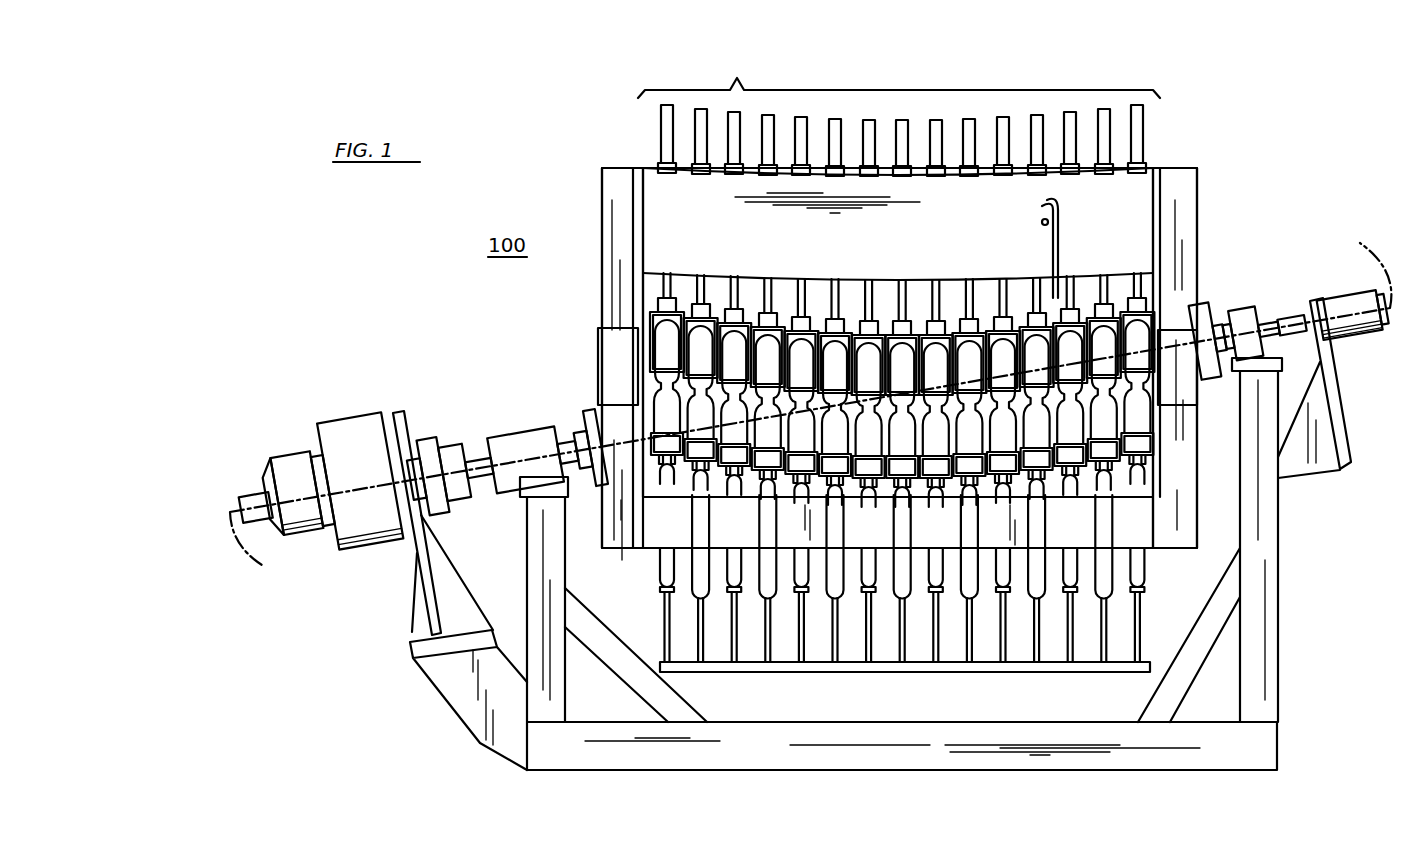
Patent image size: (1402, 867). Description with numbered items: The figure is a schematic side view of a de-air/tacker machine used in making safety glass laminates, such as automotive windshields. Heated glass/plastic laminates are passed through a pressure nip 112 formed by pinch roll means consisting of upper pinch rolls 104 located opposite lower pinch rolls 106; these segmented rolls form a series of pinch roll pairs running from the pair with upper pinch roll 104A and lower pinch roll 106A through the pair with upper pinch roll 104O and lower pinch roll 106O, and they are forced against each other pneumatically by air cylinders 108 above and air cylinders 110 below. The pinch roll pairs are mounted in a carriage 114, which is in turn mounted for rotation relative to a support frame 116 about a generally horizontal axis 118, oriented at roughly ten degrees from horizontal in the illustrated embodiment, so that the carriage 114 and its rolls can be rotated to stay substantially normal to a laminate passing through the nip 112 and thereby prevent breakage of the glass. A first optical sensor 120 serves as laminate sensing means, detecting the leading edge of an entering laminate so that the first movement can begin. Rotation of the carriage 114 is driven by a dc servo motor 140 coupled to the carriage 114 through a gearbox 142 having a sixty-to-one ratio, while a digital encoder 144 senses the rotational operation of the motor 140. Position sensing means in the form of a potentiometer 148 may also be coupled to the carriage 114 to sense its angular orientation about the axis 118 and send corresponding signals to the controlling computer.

The upper pinch rolls 104 is at (833, 360).
The upper pinch roll of last pinch roll pair 104O is at (662, 342).
The upper pinch roll of first pinch roll pair 104A is at (1160, 318).
The lower pinch rolls 106 is at (773, 430).
The lower pinch roll of last pinch roll pair 106O is at (663, 395).
The lower pinch roll of first pinch roll pair 106A is at (1145, 415).
The air cylinders 108 is at (899, 113).
The air cylinders 110 is at (800, 588).
The pressure nip 112 is at (643, 370).
The carriage 114 is at (602, 182).
The support frame 116 is at (537, 537).
The generally horizontal axis 118 is at (810, 405).
The first optical sensor 120 is at (1060, 282).
The dc servo motor 140 is at (302, 456).
The gearbox 142 is at (373, 428).
The digital encoder 144 is at (256, 494).
The position sensing potentiometer 148 is at (1342, 300).